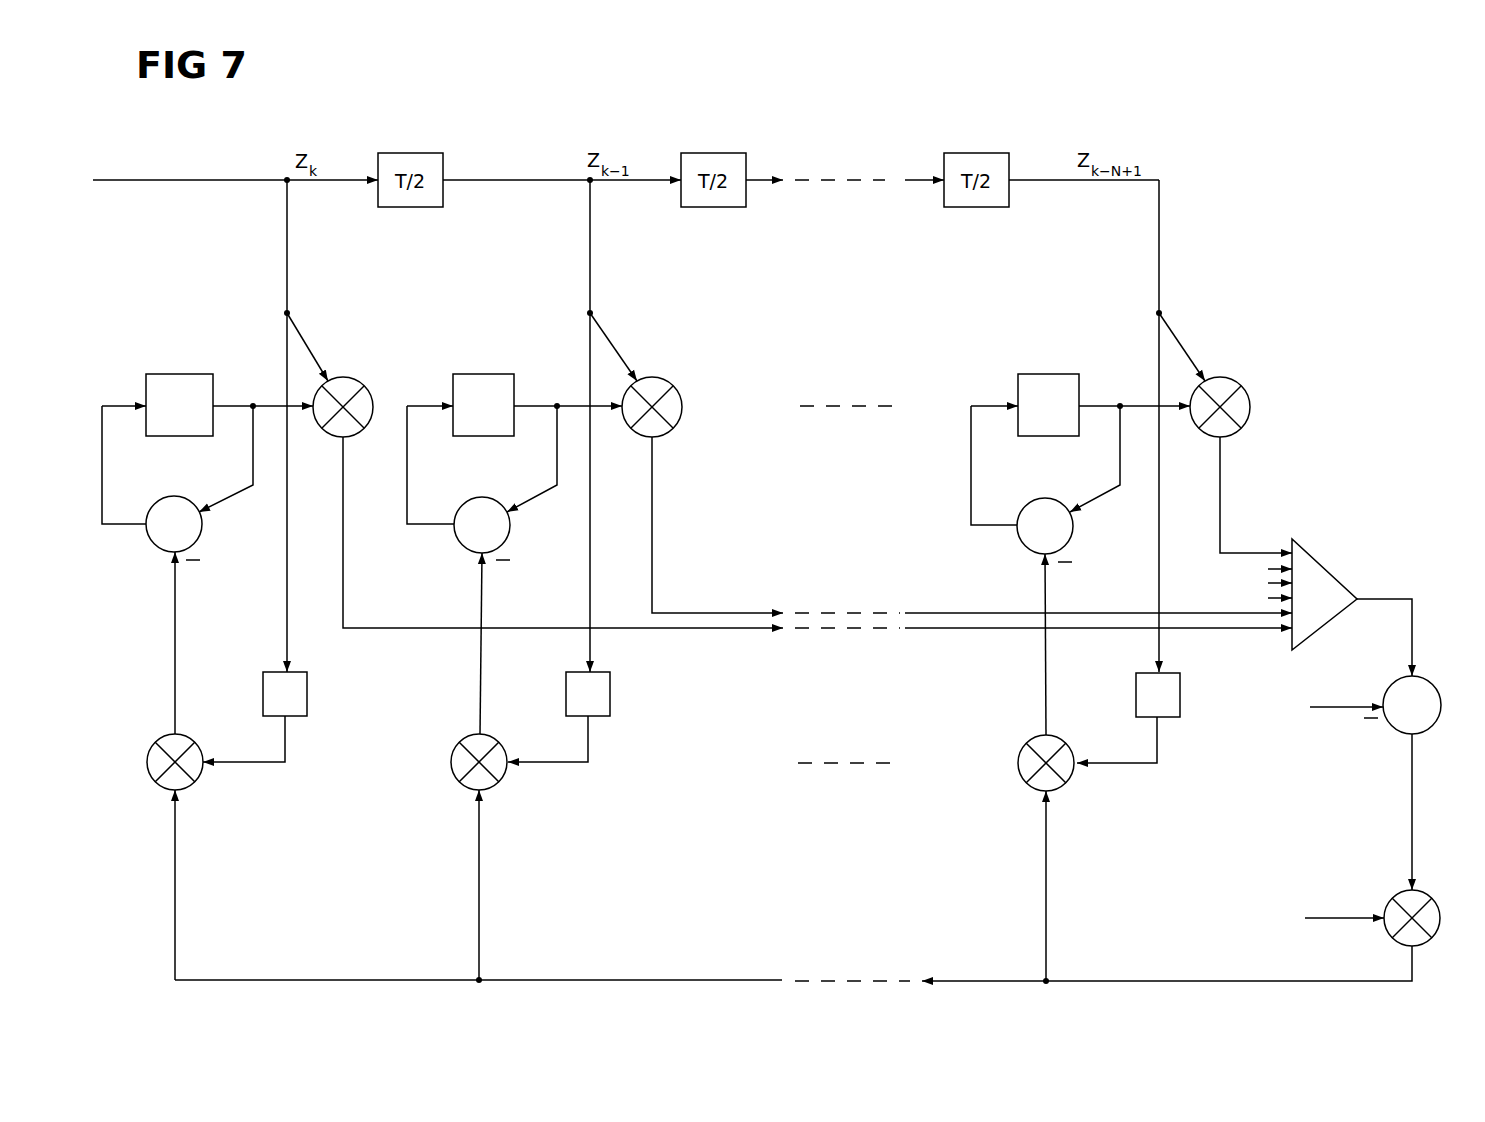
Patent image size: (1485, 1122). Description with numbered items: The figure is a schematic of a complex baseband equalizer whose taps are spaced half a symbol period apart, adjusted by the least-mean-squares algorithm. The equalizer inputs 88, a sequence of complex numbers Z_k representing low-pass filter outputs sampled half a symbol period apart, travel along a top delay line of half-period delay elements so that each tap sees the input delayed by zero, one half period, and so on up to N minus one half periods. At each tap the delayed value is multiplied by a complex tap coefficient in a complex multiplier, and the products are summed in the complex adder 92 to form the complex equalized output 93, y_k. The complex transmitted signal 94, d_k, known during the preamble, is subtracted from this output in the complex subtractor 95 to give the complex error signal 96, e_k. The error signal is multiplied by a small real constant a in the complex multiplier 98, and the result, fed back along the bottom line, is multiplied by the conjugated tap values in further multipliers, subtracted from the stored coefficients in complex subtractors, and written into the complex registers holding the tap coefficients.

The equalizer inputs 88 is at (195, 180).
The complex adder 92 is at (1327, 562).
The complex equalized output 93 is at (1412, 625).
The complex transmitted signal 94 is at (1335, 707).
The complex subtractor 95 is at (1437, 717).
The complex error signal 96 is at (1412, 787).
The complex multiplier 98 is at (1437, 900).